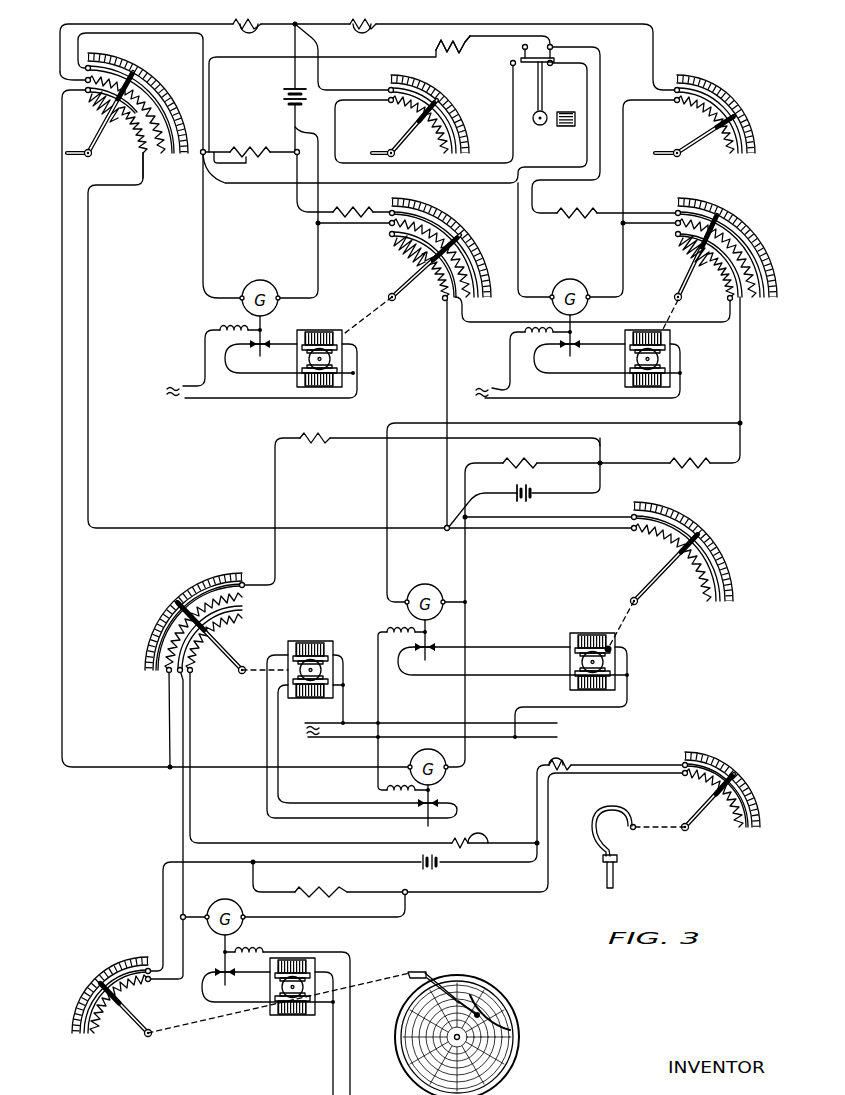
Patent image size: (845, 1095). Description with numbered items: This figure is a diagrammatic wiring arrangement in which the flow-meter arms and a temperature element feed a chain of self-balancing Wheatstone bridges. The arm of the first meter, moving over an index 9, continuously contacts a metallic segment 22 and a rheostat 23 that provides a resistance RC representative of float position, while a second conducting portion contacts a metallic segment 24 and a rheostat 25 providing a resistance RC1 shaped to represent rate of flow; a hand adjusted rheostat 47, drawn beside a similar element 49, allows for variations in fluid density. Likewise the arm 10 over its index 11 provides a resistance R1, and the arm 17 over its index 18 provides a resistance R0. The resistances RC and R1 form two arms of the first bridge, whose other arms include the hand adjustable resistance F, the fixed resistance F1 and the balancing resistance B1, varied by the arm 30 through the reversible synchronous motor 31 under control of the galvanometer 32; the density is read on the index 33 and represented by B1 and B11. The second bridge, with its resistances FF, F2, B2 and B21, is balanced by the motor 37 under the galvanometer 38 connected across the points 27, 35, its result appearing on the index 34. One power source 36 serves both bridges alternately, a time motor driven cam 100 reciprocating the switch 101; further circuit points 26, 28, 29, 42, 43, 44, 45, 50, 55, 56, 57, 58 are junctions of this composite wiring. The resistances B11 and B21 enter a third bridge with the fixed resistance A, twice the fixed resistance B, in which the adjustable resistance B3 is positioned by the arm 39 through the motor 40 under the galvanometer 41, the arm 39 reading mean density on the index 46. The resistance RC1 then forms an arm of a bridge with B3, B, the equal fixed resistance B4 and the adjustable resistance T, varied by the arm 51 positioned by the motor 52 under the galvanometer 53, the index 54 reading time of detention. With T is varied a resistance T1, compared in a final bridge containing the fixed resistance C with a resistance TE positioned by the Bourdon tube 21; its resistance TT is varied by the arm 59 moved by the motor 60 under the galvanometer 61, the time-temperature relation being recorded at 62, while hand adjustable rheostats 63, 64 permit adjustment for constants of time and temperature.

The scale of fuel-rate meter 9 is at (156, 82).
The arm 10 is at (422, 130).
The scale of meter 11 is at (450, 100).
The arm 17 is at (710, 135).
The scale of meter 18 is at (720, 88).
The Bourdon tube 21 is at (596, 805).
The metallic segment 22 is at (173, 155).
The rheostat 23 is at (161, 155).
The metallic segment 24 is at (150, 165).
The rheostat 25 is at (88, 103).
The junction 26 is at (307, 145).
The point 27 is at (213, 143).
The junction 28 is at (295, 13).
The junction 29 is at (308, 224).
The arm 30 is at (424, 278).
The reversible synchronous motor 31 is at (296, 330).
The galvanometer 32 is at (264, 284).
The index 33 is at (484, 258).
The index 34 is at (750, 232).
The point 35 is at (614, 224).
The power source 36 is at (284, 95).
The motor 37 is at (678, 342).
The galvanometer 38 is at (574, 284).
The arm 39 is at (674, 572).
The motor 40 is at (570, 630).
The galvanometer 41 is at (429, 588).
The junction 42 is at (752, 423).
The junction 43 is at (476, 510).
The junction 44 is at (611, 472).
The junction 45 is at (447, 538).
The index 46 is at (714, 540).
The hand adjusted rheostat 47 is at (247, 16).
The fuse 49 is at (363, 16).
The junction 50 is at (163, 776).
The arm 51 is at (228, 648).
The motor 52 is at (290, 640).
The galvanometer 53 is at (446, 788).
The index 54 is at (172, 598).
The junction 55 is at (249, 853).
The junction 56 is at (174, 917).
The junction 57 is at (405, 883).
The junction 58 is at (528, 834).
The arm 59 is at (118, 1006).
The motor 60 is at (276, 1022).
The galvanometer 61 is at (226, 897).
The recorder 62 is at (480, 982).
The hand adjustable rheostat 63 is at (470, 832).
The hand adjustable rheostat 64 is at (560, 754).
The time motor driven cam 100 is at (554, 105).
The switch 101 is at (533, 65).
The resistance RC is at (99, 114).
The resistance RC1 is at (136, 142).
The fixed resistance B is at (520, 469).
The hand adjustable resistance F is at (250, 141).
The hand adjustable resistance FF is at (458, 49).
The fixed resistance F1 is at (353, 202).
The resistance F2 is at (577, 202).
The resistance R1 is at (414, 106).
The resistance R0 is at (704, 110).
The balancing resistance B1 is at (392, 228).
The resistance B11 is at (444, 292).
The resistance B2 is at (678, 228).
The resistance B21 is at (722, 271).
The adjustable resistance B3 is at (664, 546).
The fixed resistance B4 is at (315, 427).
The fixed resistance A is at (687, 453).
The resistance C is at (321, 881).
The adjustable resistance T is at (168, 670).
The resistance T1 is at (200, 654).
The resistance TE is at (700, 782).
The resistance TT is at (124, 984).